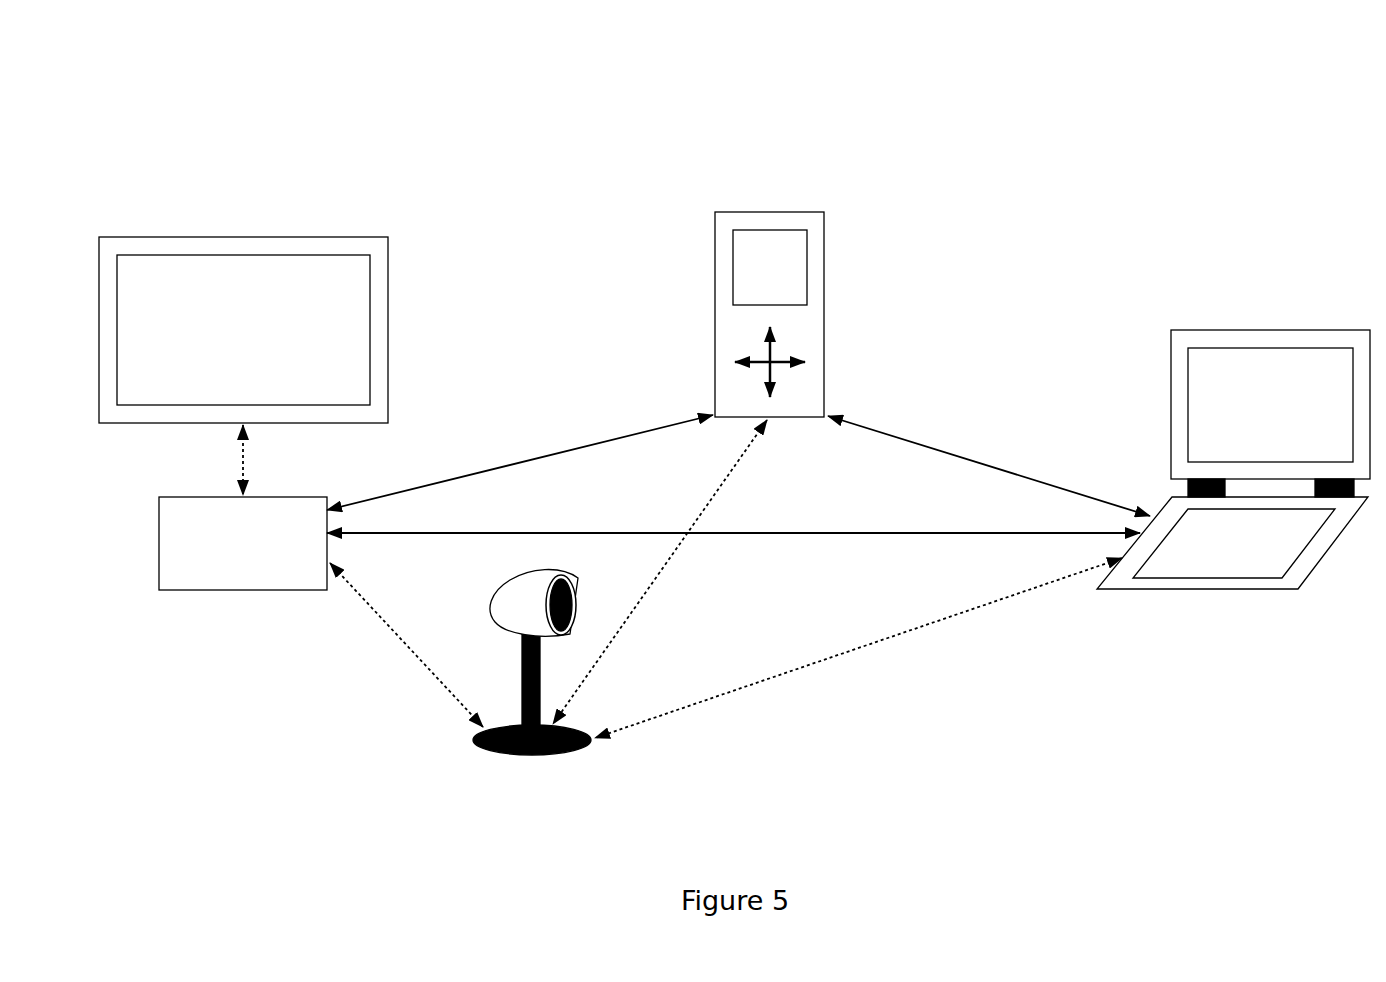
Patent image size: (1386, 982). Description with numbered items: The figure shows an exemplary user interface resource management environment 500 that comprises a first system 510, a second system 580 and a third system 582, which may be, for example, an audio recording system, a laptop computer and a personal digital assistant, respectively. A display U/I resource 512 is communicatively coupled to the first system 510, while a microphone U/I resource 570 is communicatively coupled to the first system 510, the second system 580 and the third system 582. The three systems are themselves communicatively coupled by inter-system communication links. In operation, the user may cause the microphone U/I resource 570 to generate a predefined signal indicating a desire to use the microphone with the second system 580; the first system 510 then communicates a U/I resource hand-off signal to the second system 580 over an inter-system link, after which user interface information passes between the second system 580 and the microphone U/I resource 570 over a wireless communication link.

The user interface resource management environment 500 is at (203, 120).
The first system 510 is at (193, 590).
The display U/I resource 512 is at (388, 293).
The microphone U/I resource 570 is at (470, 738).
The second system 580 is at (1171, 383).
The third system 582 is at (715, 328).